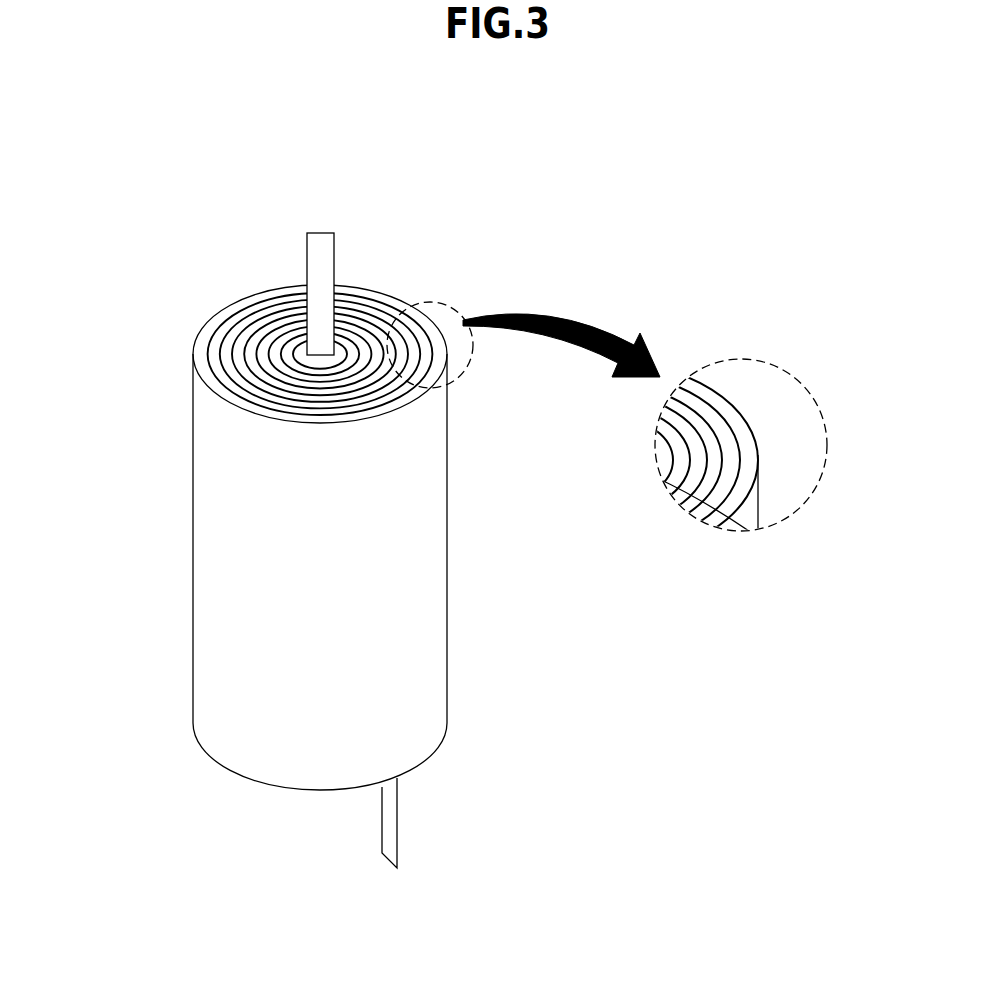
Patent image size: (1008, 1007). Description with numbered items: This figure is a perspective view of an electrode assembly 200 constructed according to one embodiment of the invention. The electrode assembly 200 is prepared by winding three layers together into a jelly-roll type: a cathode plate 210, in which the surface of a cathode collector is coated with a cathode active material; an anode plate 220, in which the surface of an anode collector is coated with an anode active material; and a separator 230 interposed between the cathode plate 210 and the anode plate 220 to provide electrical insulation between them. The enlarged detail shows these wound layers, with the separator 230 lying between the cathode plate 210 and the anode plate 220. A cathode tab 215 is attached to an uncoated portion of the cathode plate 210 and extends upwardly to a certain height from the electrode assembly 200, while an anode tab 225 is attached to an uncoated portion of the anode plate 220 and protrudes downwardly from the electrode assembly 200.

The electrode assembly 200 is at (137, 212).
The cathode plate 210 is at (697, 455).
The cathode tab 215 is at (317, 240).
The anode plate 220 is at (718, 472).
The anode tab 225 is at (388, 815).
The separator 230 is at (700, 492).